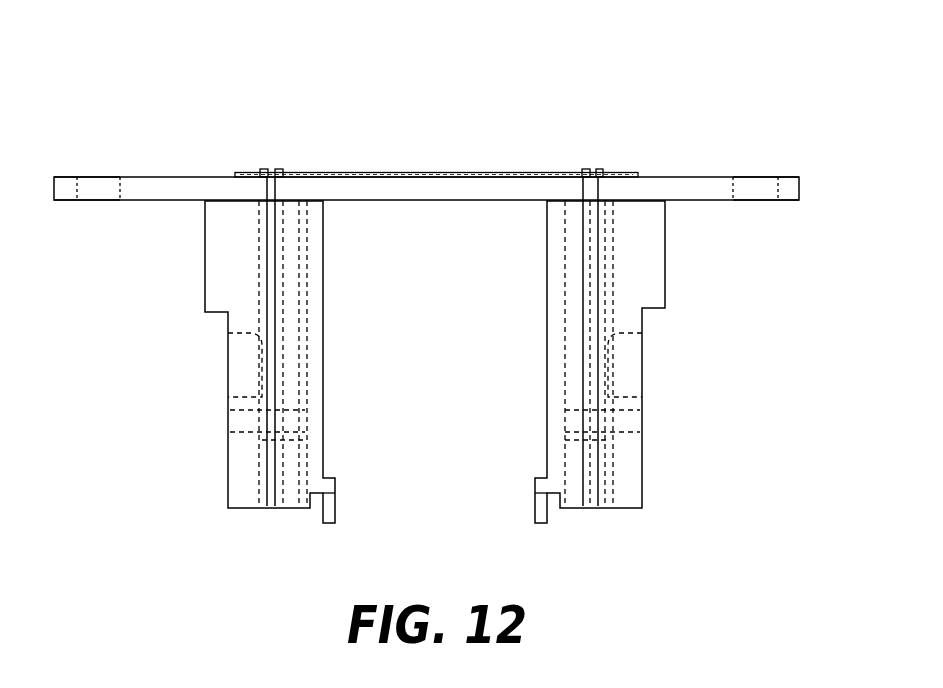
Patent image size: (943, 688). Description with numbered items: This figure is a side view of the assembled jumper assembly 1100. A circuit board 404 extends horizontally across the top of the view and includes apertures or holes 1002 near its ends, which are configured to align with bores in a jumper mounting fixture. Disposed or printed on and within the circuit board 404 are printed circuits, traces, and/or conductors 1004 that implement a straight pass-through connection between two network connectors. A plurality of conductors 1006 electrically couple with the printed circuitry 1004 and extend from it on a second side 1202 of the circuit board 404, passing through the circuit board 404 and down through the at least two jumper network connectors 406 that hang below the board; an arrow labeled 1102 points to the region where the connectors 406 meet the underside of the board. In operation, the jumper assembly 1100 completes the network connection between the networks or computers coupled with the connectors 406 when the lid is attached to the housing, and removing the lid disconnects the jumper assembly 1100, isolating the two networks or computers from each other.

The jumper assembly 1100 is at (205, 88).
The circuit board 404 is at (65, 177).
The apertures or holes 1002 is at (103, 178).
The printed circuits, traces, and/or conductors 1004 is at (437, 172).
The second side 1202 is at (403, 170).
The mounting surface 1102 is at (452, 212).
The jumper network connectors 406 is at (323, 407).
The conductors 1006 is at (263, 254).